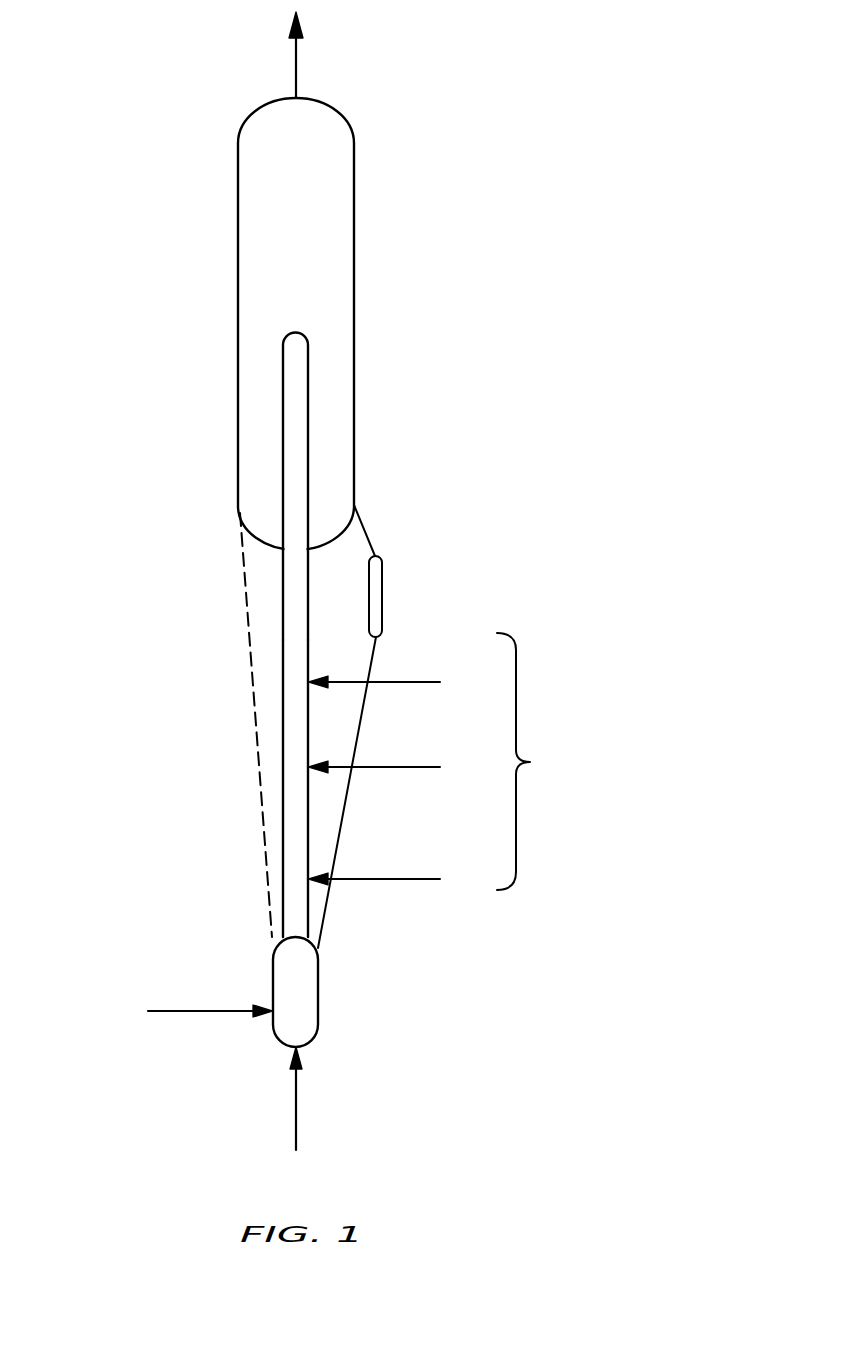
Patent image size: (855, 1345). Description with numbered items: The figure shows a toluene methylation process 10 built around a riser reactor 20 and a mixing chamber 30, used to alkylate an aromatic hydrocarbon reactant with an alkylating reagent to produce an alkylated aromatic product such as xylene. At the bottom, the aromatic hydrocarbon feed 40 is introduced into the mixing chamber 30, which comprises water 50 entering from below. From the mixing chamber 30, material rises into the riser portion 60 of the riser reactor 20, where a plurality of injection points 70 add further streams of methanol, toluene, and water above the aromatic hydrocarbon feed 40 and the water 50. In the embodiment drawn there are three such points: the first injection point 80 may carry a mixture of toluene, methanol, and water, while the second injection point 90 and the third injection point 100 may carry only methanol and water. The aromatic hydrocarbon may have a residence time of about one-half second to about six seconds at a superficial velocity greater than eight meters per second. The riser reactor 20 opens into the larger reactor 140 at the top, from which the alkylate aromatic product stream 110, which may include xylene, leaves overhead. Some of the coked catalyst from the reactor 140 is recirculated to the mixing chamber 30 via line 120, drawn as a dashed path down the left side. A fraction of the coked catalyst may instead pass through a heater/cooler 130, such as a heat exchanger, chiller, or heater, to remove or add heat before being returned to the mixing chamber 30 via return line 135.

The toluene methylation process 10 is at (102, 49).
The riser reactor 20 is at (302, 407).
The mixing chamber 30 is at (319, 990).
The aromatic hydrocarbon feed 40 is at (212, 1011).
The water 50 is at (297, 1116).
The riser portion 60 is at (283, 838).
The injection points 70 is at (535, 761).
The first injection point 80 is at (413, 879).
The second injection point 90 is at (413, 767).
The third injection point 100 is at (413, 682).
The alkylate aromatic product stream 110 is at (297, 58).
The line 120 is at (245, 597).
The heater/cooler 130 is at (383, 596).
The return line 135 is at (372, 660).
The reactor 140 is at (355, 222).